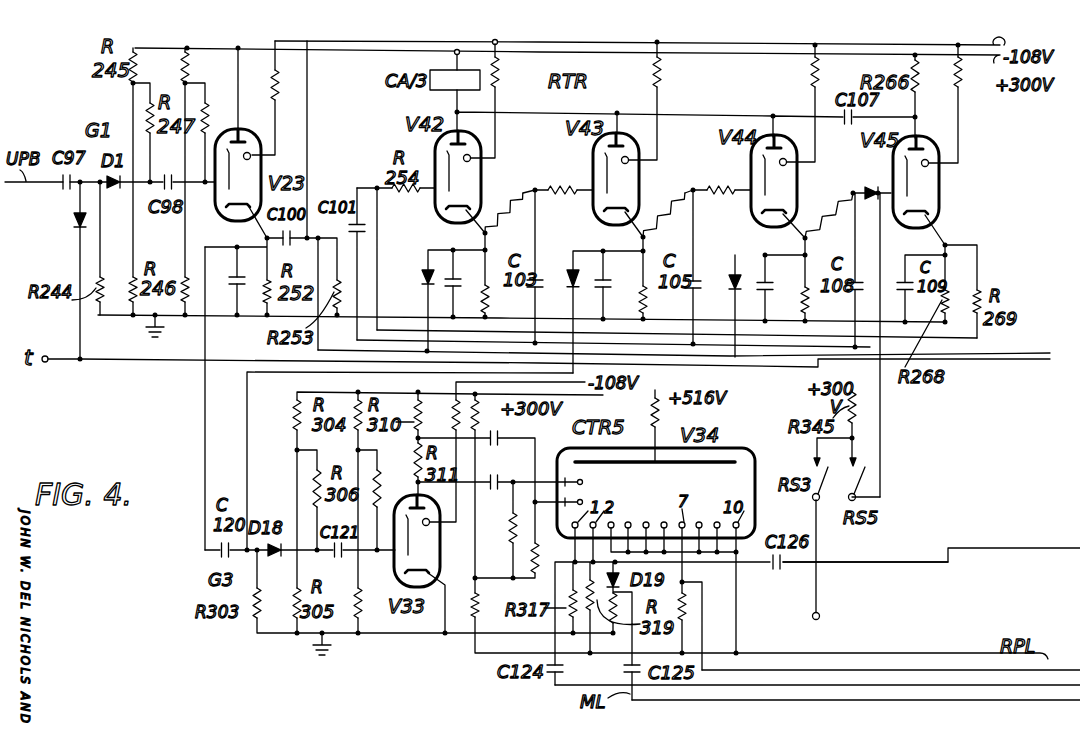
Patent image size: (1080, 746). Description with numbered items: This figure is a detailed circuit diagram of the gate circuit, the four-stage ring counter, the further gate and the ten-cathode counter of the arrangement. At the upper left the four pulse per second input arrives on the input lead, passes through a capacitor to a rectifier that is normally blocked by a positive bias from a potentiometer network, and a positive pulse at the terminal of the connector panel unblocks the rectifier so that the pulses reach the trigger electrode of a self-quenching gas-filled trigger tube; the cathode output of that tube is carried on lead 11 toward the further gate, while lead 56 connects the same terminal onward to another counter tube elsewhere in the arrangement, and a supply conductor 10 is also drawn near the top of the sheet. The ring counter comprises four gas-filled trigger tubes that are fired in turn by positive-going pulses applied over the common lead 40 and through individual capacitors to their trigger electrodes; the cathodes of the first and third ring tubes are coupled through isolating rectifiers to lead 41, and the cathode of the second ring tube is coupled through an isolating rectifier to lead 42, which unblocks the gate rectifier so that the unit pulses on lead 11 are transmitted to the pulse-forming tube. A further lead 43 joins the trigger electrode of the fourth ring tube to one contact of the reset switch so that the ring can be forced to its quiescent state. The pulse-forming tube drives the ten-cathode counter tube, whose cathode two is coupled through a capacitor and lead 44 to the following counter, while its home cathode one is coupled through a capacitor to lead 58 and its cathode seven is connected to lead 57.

The conductor 10 is at (309, 78).
The lead 11 is at (200, 512).
The common lead 40 is at (1022, 353).
The lead 41 is at (726, 357).
The lead 42 is at (247, 390).
The lead 43 is at (881, 423).
The lead 44 is at (990, 546).
The lead 56 is at (1017, 361).
The lead 57 is at (968, 684).
The lead 58 is at (884, 668).